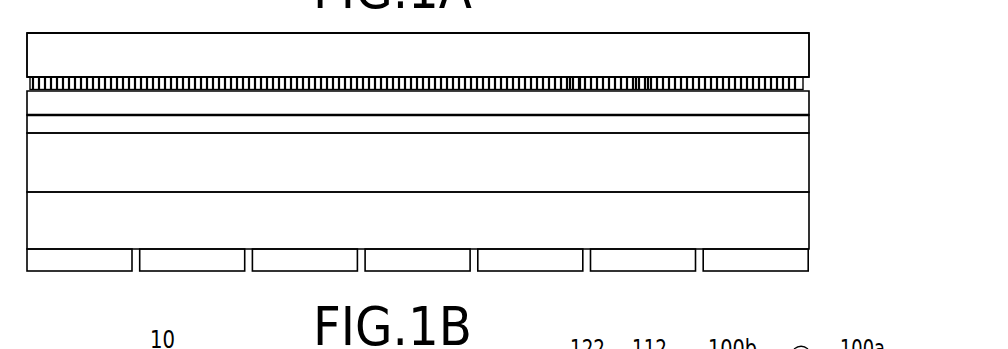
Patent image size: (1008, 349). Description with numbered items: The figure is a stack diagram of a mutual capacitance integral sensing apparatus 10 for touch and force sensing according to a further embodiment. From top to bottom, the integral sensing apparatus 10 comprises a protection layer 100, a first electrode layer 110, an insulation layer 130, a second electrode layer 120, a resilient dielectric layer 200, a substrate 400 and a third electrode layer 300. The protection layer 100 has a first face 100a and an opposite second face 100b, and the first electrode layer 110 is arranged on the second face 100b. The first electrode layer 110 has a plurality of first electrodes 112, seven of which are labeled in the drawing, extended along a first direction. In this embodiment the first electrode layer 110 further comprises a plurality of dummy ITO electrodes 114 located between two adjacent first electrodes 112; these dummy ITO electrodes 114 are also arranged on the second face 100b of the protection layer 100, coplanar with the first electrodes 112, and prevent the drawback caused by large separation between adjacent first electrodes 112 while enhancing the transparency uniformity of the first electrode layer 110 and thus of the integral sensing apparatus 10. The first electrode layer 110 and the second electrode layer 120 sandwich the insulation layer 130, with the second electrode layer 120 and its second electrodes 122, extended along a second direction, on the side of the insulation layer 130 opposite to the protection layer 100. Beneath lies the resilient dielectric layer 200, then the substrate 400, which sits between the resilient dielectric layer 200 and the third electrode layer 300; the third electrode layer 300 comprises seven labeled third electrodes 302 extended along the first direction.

The integral sensing apparatus 10 is at (177, 15).
The protection layer 100 is at (809, 47).
The first face 100a is at (783, 33).
The second face 100b is at (725, 78).
The first electrode layer 110 is at (803, 82).
The first electrodes 112 is at (643, 78).
The dummy ITO electrodes 114 is at (575, 78).
The second electrode layer 120 is at (809, 120).
The second electrodes 122 is at (598, 122).
The insulation layer 130 is at (809, 98).
The resilient dielectric layer 200 is at (809, 162).
The third electrode layer 300 is at (809, 258).
The third electrode 302 is at (677, 265).
The substrate 400 is at (809, 220).